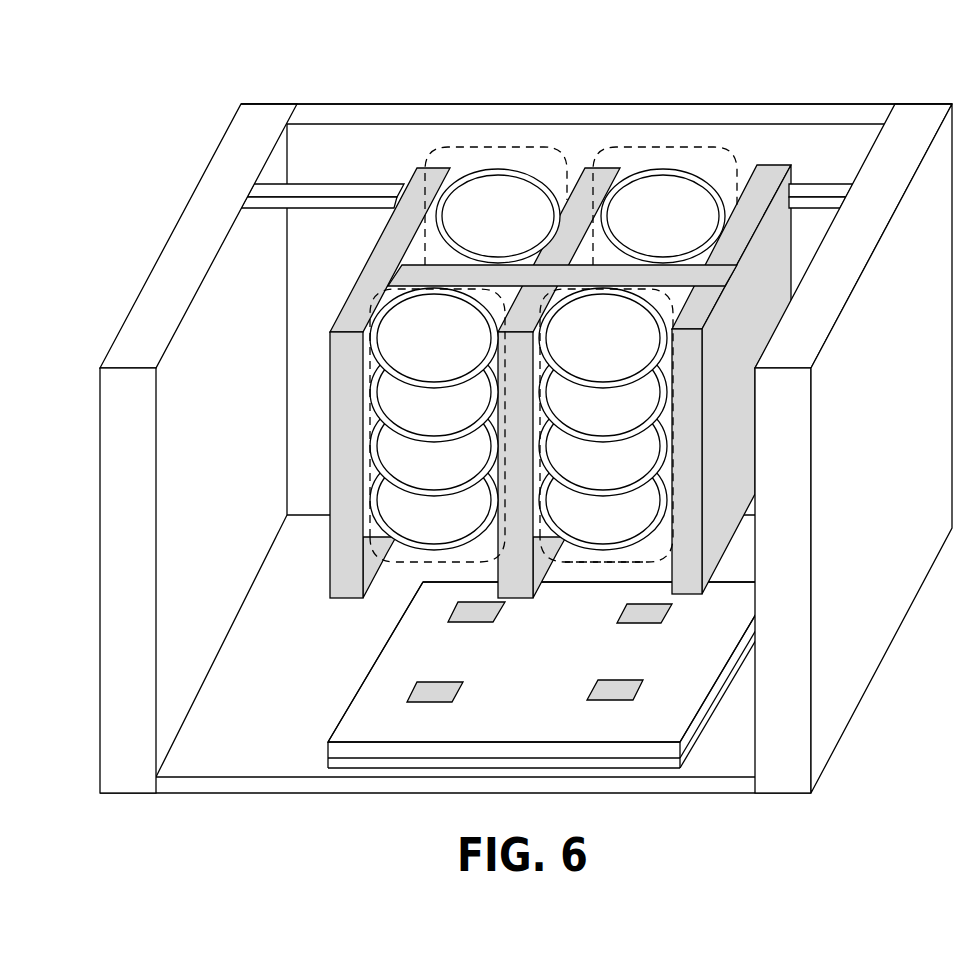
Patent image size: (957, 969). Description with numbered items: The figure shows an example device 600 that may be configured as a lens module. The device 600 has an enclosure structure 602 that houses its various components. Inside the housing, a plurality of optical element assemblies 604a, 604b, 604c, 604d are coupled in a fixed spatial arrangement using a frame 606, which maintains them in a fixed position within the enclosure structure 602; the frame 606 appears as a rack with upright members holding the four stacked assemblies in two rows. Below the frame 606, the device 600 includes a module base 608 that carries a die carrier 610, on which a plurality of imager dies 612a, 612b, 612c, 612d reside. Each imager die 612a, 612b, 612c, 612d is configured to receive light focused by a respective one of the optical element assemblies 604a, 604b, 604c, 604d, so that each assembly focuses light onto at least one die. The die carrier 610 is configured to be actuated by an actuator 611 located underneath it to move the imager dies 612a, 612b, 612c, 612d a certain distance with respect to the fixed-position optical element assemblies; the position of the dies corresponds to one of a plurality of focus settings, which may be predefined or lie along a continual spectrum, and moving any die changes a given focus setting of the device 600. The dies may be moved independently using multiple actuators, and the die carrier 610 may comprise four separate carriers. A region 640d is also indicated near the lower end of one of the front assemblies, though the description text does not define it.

The device 600 is at (926, 82).
The enclosure structure 602 is at (90, 481).
The optical element assembly 604a is at (498, 140).
The optical element assembly 604b is at (396, 571).
The optical element assembly 604c is at (660, 140).
The optical element assembly 604d is at (606, 415).
The frame 606 is at (345, 600).
The module base 608 is at (300, 786).
The die carrier 610 is at (565, 674).
The actuator 611 is at (327, 760).
The imager die 612a is at (470, 625).
The imager die 612b is at (430, 703).
The imager die 612c is at (633, 625).
The imager die 612d is at (603, 702).
The canister bottom region 640d is at (668, 571).